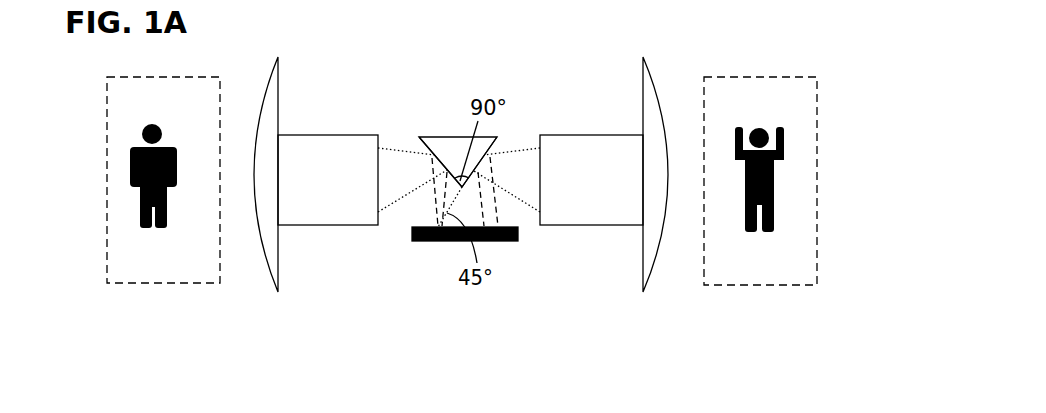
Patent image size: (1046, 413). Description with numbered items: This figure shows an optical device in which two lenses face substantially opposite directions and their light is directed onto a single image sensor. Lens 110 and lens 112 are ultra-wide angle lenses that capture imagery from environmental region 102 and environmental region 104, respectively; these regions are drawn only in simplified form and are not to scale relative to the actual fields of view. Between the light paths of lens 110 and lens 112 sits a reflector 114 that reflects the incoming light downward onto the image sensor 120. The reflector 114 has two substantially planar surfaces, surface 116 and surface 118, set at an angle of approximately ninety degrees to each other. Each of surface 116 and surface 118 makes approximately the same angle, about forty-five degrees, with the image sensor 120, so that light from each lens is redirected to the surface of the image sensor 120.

The environmental region 102 is at (107, 195).
The environmental region 104 is at (817, 195).
The lens 110 is at (316, 174).
The lens 112 is at (604, 174).
The reflector 114 is at (442, 136).
The surface 116 is at (413, 137).
The surface 118 is at (505, 138).
The image sensor 120 is at (493, 241).